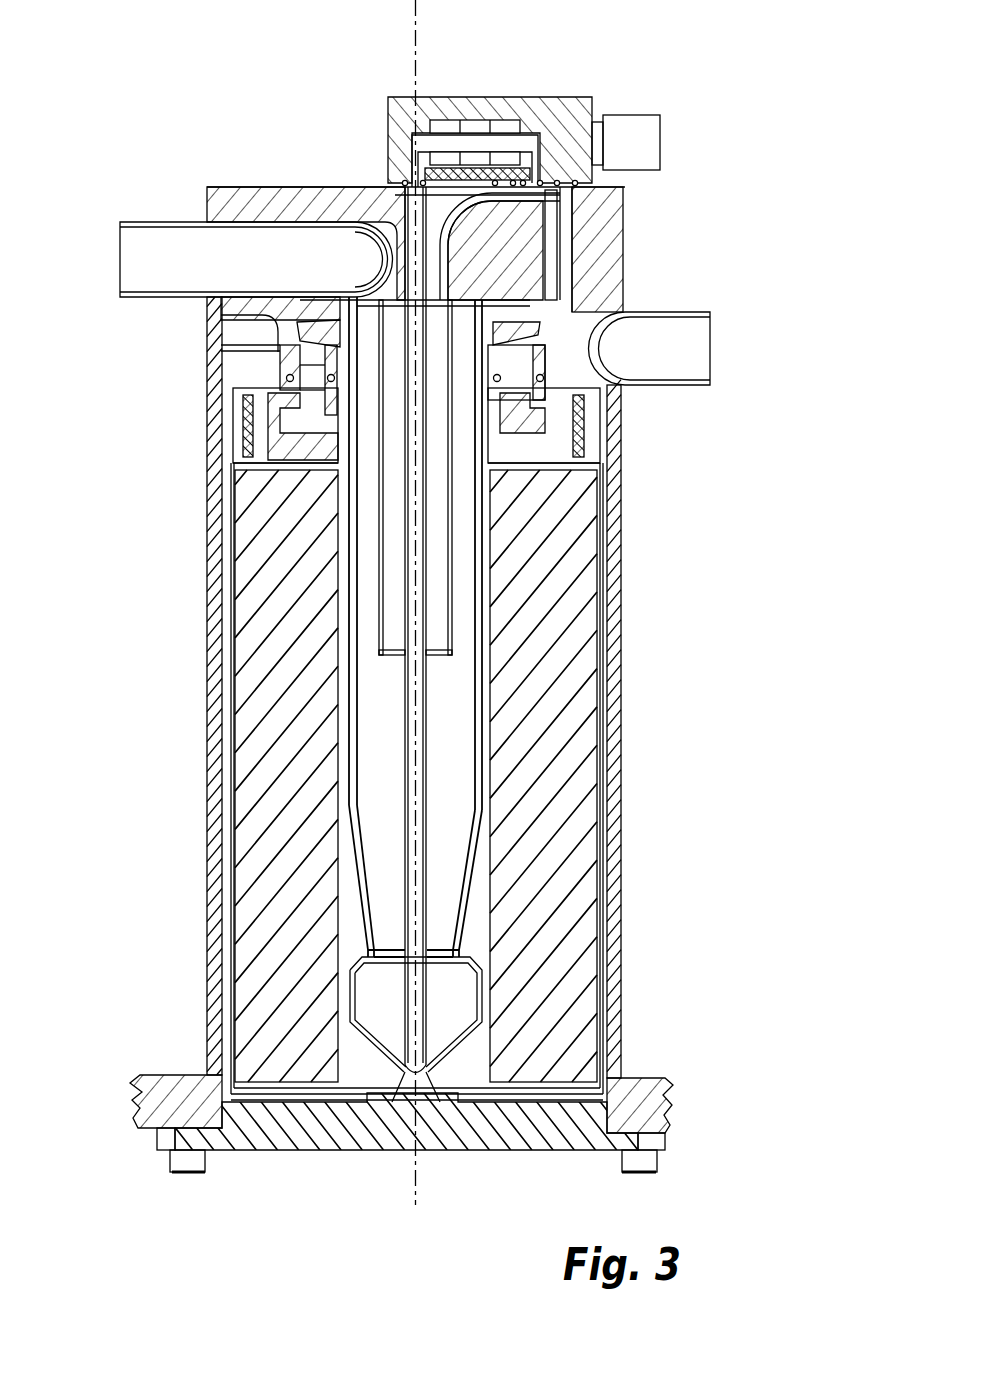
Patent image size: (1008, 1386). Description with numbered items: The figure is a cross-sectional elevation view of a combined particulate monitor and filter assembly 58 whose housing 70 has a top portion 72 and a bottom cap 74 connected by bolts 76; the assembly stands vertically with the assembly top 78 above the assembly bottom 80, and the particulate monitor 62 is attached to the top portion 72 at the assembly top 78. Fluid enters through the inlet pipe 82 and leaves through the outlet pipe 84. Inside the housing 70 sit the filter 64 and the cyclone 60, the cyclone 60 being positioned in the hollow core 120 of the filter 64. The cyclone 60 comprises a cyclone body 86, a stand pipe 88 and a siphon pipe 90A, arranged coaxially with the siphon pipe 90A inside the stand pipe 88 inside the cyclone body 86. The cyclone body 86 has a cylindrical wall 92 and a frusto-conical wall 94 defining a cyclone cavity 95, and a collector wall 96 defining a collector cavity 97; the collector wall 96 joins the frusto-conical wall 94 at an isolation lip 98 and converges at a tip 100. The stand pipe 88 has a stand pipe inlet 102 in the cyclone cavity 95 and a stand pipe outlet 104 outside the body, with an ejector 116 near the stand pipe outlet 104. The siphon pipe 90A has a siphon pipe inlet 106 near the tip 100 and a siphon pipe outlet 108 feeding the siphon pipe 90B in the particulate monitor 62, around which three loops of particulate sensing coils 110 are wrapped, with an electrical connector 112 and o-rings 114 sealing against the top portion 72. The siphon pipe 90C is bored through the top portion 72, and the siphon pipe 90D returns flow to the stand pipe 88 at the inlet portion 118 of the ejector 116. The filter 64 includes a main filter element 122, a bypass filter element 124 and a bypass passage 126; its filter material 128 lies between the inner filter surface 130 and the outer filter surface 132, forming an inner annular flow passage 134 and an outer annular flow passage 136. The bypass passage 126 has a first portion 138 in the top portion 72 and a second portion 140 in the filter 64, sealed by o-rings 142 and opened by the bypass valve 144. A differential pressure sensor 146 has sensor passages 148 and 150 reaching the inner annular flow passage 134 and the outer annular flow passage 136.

The filter assembly 58 is at (766, 221).
The cyclone 60 is at (346, 525).
The particulate monitor 62 is at (478, 92).
The filter 64 is at (231, 583).
The housing 70 is at (207, 860).
The top portion 72 is at (213, 975).
The bottom cap 74 is at (401, 1146).
The bolts 76 is at (181, 1160).
The assembly top 78 is at (213, 187).
The assembly bottom 80 is at (273, 1152).
The inlet pipe 82 is at (131, 222).
The outlet pipe 84 is at (688, 386).
The cyclone body 86 is at (346, 485).
The stand pipe 88 is at (456, 613).
The siphon pipe 90A is at (431, 841).
The siphon pipe 90B is at (518, 175).
The siphon pipe 90C is at (565, 300).
The siphon pipe 90D is at (594, 344).
The cylindrical wall 92 is at (478, 541).
The frusto-conical wall 94 is at (462, 889).
The cyclone cavity 95 is at (383, 804).
The collector wall 96 is at (479, 1001).
The collector cavity 97 is at (367, 1000).
The isolation lip 98 is at (461, 958).
The tip 100 is at (427, 1078).
The stand pipe inlet 102 is at (450, 660).
The stand pipe outlet 104 is at (383, 198).
The siphon pipe inlet 106 is at (396, 1078).
The siphon pipe outlet 108 is at (400, 232).
The particulate sensing coils 110 is at (448, 99).
The electrical connector 112 is at (623, 116).
The o-rings 114 is at (575, 182).
The ejector 116 is at (393, 206).
The inlet portion 118 is at (505, 330).
The hollow core 120 is at (357, 935).
The main filter element 122 is at (230, 768).
The bypass filter element 124 is at (248, 441).
The bypass passage 126 is at (247, 406).
The filter material 128 is at (265, 700).
The inner filter surface 130 is at (344, 730).
The outer filter surface 132 is at (237, 642).
The inner annular flow passage 134 is at (480, 753).
The outer annular flow passage 136 is at (607, 794).
The first portion 138 is at (320, 322).
The second portion 140 is at (287, 427).
The o-rings 142 is at (268, 375).
The bypass valve 144 is at (300, 336).
The differential pressure sensor 146 is at (598, 192).
The sensor passage 148 is at (580, 198).
The sensor passage 150 is at (582, 254).